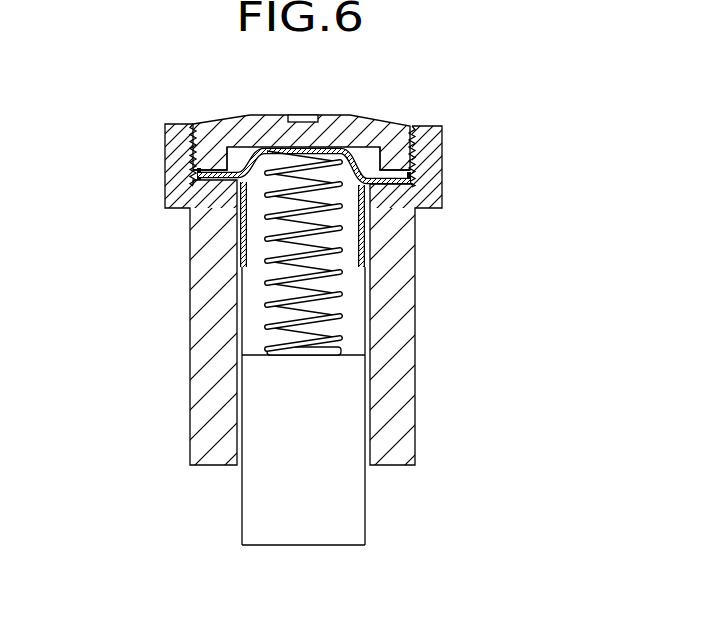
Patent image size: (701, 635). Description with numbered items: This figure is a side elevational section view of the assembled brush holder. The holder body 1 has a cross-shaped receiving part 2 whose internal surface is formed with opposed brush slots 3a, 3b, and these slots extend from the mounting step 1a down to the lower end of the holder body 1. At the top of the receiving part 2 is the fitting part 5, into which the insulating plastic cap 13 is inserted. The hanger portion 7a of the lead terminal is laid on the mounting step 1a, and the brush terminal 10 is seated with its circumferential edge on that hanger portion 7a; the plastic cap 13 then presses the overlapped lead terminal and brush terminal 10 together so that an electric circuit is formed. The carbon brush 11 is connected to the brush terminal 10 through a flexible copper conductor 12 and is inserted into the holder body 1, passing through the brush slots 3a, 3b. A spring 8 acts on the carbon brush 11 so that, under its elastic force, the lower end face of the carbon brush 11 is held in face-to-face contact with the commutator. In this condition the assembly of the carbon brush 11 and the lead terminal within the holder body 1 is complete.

The holder body 1 is at (400, 392).
The mounting step 1a is at (193, 164).
The receiving part 2 is at (258, 302).
The brush slot 3a is at (238, 396).
The brush slot 3b is at (367, 430).
The fitting part 5 is at (408, 160).
The hanger portion 7a is at (415, 210).
The spring 8 is at (330, 293).
The brush terminal 10 is at (256, 142).
The carbon brush 11 is at (345, 518).
The flexible copper conductor 12 is at (335, 280).
The plastic cap 13 is at (346, 127).